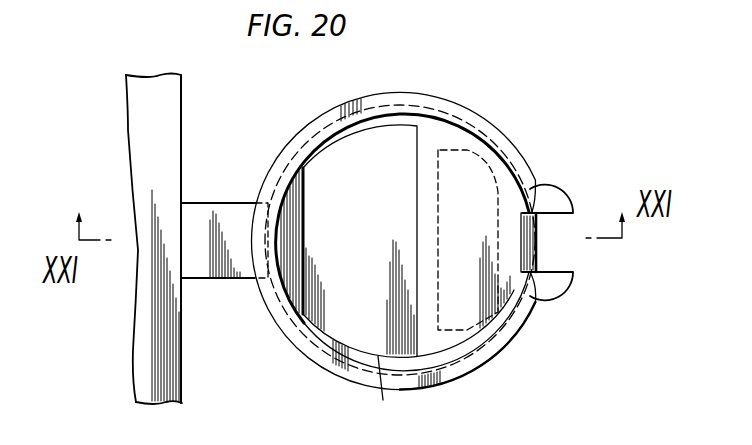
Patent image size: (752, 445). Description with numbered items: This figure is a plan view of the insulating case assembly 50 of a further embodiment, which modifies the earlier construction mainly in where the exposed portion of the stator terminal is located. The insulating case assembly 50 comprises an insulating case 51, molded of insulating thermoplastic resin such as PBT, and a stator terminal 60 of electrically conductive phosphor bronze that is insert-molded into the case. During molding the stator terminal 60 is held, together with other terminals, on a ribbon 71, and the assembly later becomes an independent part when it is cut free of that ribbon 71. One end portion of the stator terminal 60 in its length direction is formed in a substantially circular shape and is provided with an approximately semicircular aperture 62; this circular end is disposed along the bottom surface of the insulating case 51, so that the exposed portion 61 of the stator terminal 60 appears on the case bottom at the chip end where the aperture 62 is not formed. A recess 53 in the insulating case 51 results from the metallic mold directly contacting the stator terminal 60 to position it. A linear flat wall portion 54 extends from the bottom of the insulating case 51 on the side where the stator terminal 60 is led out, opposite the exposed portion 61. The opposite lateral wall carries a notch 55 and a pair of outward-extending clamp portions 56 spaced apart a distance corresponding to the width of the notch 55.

The insulating case assembly 50 is at (472, 94).
The insulating case 51 is at (401, 92).
The recess 53 is at (487, 333).
The linear flat wall portion 54 is at (306, 226).
The notch 55 is at (527, 215).
The clamp portions 56 is at (559, 195).
The stator terminal 60 is at (212, 203).
The exposed portion 61 is at (474, 210).
The aperture 62 is at (392, 391).
The ribbon 71 is at (153, 77).